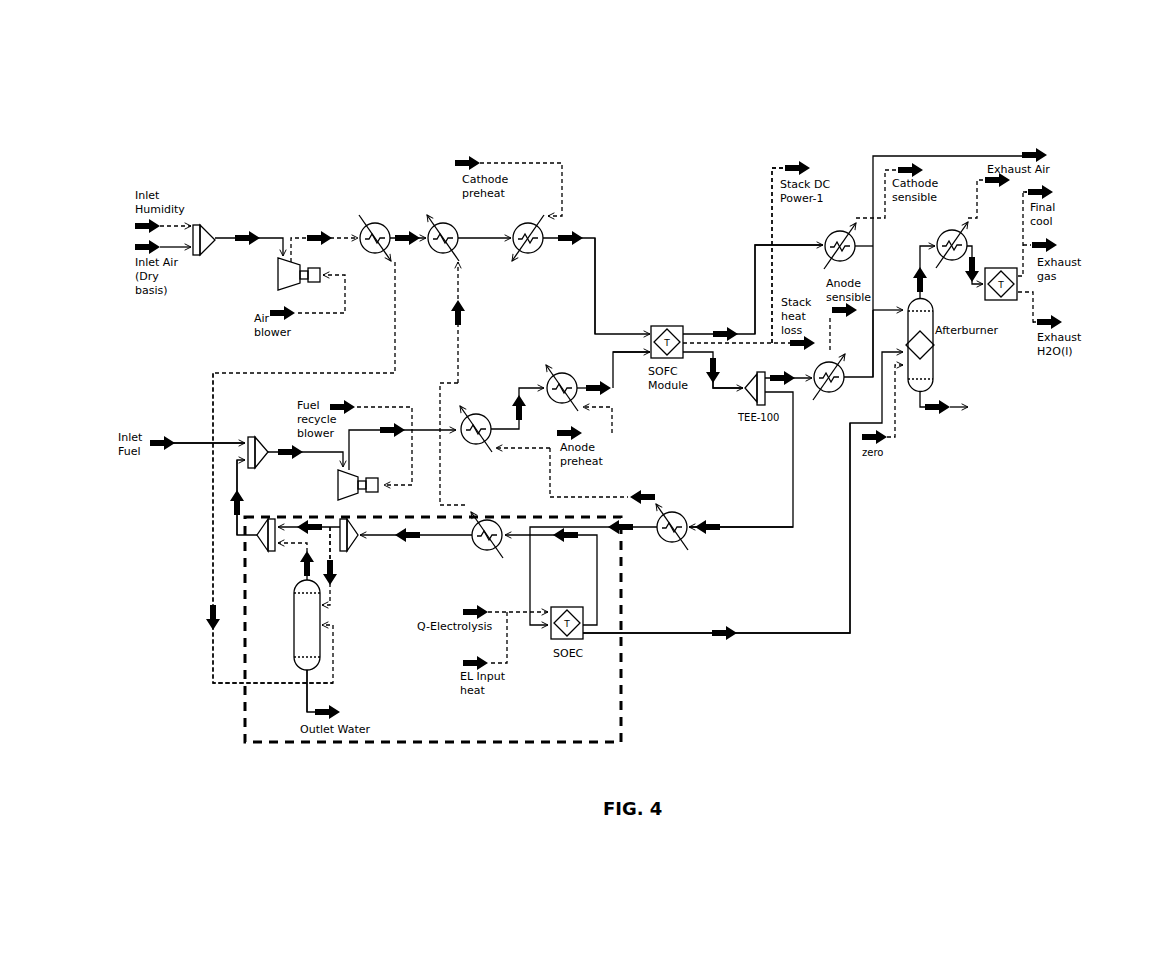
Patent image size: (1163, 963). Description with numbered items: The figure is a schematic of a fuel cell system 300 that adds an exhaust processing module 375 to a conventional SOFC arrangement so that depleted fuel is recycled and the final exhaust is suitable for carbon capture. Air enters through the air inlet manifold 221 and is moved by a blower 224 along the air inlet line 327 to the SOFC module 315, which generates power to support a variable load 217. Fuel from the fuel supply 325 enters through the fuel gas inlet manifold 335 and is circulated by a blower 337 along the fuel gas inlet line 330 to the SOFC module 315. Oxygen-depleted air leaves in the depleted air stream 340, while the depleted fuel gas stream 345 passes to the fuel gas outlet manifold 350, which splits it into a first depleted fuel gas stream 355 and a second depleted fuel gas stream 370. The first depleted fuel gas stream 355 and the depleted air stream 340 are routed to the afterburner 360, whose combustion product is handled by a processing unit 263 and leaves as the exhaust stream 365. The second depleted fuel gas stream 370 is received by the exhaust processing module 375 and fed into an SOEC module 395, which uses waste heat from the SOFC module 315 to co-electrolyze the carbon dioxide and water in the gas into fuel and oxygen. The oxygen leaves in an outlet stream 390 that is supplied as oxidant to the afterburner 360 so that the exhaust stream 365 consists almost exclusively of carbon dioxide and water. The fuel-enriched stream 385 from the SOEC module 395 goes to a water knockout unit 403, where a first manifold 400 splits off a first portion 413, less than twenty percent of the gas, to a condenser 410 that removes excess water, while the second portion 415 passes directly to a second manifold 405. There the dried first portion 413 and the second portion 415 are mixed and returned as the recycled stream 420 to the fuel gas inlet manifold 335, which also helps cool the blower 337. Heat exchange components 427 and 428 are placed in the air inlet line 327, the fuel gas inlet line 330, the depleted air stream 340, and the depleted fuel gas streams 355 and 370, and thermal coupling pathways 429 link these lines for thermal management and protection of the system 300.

The air inlet manifold 221 is at (216, 230).
The blower 224 is at (288, 258).
The heat exchange component 428 is at (373, 222).
The thermal coupling pathway 429 is at (550, 483).
The water knockout unit 403 is at (198, 660).
The air inlet line 327 is at (598, 246).
The SOFC module 315 is at (667, 325).
The fuel gas inlet line 330 is at (611, 386).
The variable load 217 is at (771, 183).
The depleted air stream 340 is at (755, 292).
The heat exchange component 427 is at (842, 226).
The first depleted fuel gas stream 355 is at (875, 305).
The afterburner 360 is at (936, 345).
The processing unit 263 is at (1011, 302).
The exhaust stream 365 is at (1092, 290).
The depleted fuel gas stream 345 is at (710, 386).
The fuel gas outlet manifold 350 is at (750, 405).
The fuel supply 325 is at (197, 441).
The fuel gas inlet manifold 335 is at (243, 447).
The blower 337 is at (335, 487).
The recycled stream 420 is at (233, 502).
The second manifold 405 is at (255, 545).
The first manifold 400 is at (348, 553).
The second portion 415 is at (333, 568).
The first portion 413 is at (332, 604).
The condenser 410 is at (293, 652).
The SOEC module 395 is at (556, 640).
The fuel-enriched stream 385 is at (622, 612).
The exhaust processing module 375 is at (623, 730).
The second depleted fuel gas stream 370 is at (688, 547).
The outlet stream 390 is at (760, 637).
The fuel cell system 300 is at (936, 679).